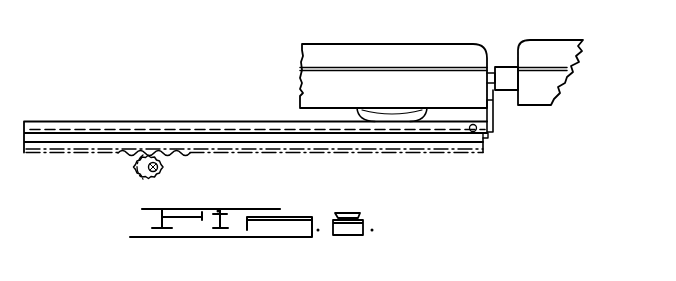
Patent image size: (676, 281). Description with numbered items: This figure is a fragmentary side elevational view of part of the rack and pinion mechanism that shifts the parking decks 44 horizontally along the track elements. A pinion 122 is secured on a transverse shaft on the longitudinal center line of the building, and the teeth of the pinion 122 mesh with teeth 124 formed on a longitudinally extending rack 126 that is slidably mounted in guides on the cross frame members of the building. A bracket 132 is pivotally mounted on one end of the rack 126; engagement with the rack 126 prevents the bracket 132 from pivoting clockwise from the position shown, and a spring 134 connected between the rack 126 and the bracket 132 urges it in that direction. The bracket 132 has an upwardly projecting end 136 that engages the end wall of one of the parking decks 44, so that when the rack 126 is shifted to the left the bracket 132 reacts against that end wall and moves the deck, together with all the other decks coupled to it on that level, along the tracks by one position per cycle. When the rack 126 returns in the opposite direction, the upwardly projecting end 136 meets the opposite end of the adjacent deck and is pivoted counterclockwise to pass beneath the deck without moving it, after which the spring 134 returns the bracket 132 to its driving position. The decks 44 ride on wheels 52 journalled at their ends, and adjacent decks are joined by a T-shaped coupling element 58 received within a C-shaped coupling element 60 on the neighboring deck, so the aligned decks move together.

The parking deck 44 is at (300, 87).
The wheel 52 is at (390, 115).
The T-shaped coupling element 58 is at (492, 70).
The coupling element 60 is at (506, 70).
The pinion 122 is at (165, 176).
The teeth 124 is at (183, 157).
The rack 126 is at (218, 124).
The bracket 132 is at (489, 131).
The spring 134 is at (484, 139).
The upwardly projecting end 136 is at (494, 113).